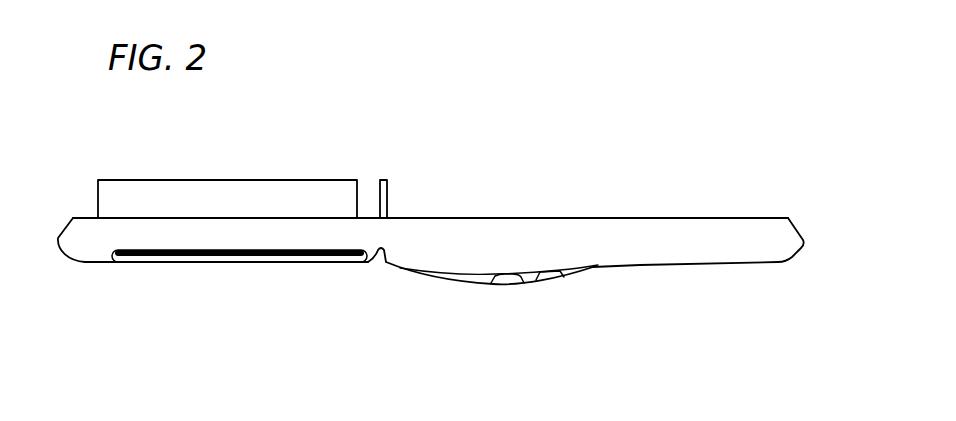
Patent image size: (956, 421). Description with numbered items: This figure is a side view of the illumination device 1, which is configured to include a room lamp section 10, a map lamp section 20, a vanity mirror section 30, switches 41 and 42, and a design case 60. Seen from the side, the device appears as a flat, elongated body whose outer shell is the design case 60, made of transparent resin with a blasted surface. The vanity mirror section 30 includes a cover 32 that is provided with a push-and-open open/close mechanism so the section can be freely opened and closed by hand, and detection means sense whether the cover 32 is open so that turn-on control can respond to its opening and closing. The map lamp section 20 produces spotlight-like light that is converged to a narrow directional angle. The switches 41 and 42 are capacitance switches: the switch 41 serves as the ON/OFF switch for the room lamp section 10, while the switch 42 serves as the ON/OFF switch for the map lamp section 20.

The illumination device 1 is at (571, 165).
The room lamp section 10 is at (631, 293).
The map lamp section 20 is at (411, 293).
The vanity mirror section 30 is at (268, 279).
The cover 32 is at (212, 263).
The switch 41 is at (548, 284).
The switch 42 is at (507, 285).
The design case 60 is at (800, 240).